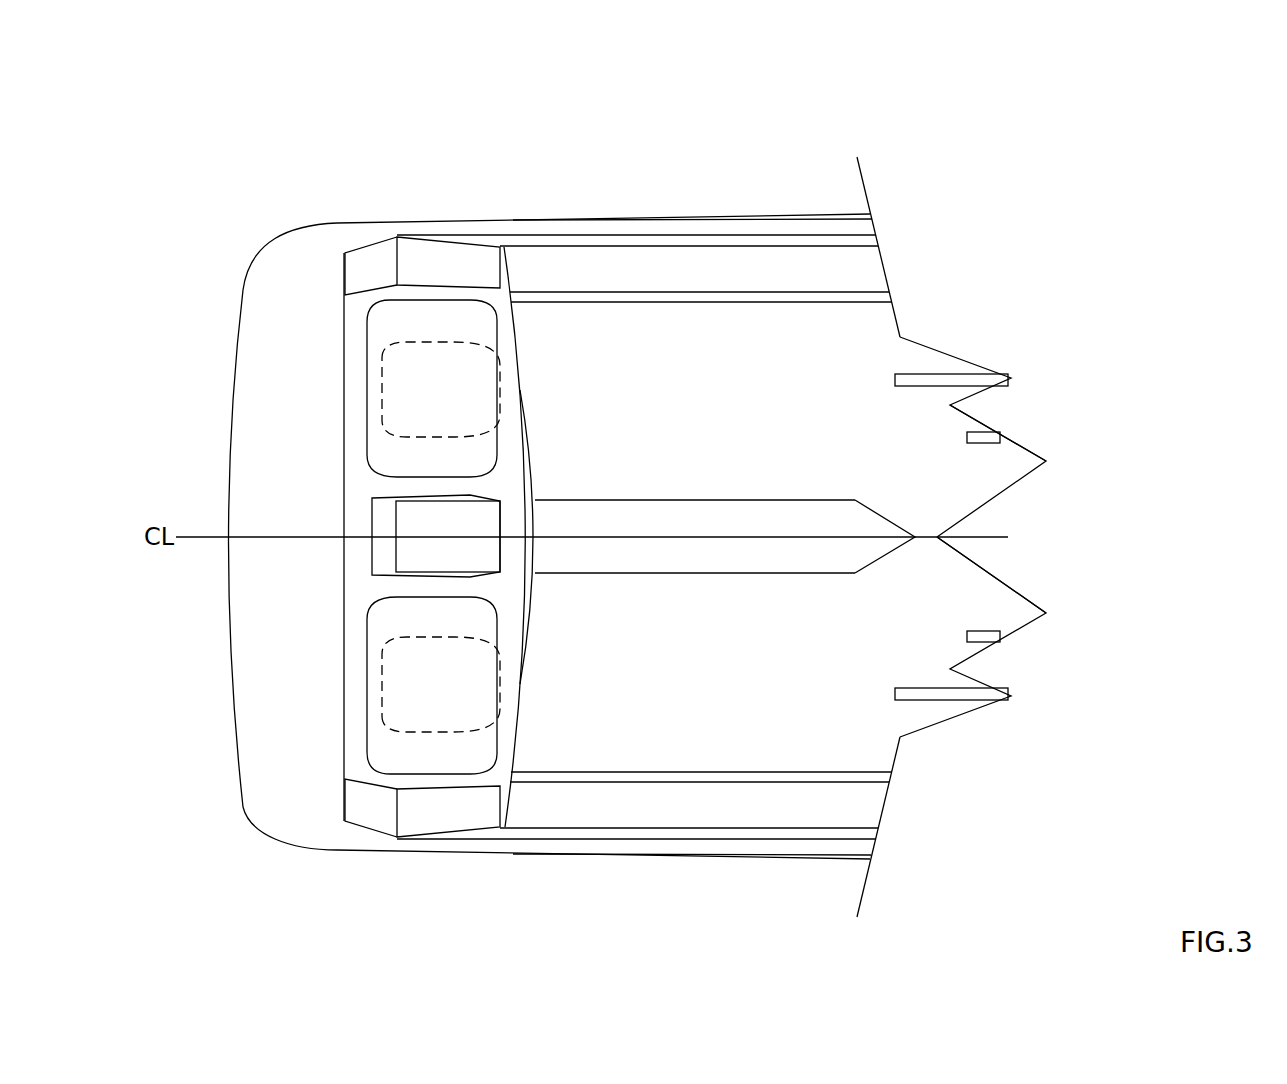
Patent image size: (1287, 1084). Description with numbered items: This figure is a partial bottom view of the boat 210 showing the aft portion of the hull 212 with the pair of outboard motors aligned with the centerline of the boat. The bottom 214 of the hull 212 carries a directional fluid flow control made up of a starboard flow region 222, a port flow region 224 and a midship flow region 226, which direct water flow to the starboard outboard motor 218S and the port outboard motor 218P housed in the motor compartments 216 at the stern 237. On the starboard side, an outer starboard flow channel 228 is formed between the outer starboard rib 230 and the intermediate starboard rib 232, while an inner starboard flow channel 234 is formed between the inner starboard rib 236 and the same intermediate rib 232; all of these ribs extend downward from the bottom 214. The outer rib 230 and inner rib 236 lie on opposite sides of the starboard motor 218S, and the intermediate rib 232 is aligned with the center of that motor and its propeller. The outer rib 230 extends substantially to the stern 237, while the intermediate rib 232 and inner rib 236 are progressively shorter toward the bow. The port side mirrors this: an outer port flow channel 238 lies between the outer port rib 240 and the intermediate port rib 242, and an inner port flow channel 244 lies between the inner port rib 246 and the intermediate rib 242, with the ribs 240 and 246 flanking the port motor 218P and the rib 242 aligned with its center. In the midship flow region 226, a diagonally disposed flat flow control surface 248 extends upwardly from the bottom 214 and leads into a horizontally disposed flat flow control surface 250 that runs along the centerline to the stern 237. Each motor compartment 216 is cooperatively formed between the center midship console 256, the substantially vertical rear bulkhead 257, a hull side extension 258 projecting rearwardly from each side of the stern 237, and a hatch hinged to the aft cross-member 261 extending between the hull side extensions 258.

The boat 210 is at (946, 170).
The hull 212 is at (648, 190).
The bottom of the hull 214 is at (983, 630).
The motor compartment 216 is at (515, 286).
The starboard outboard motor 218S is at (524, 391).
The port outboard motor 218P is at (523, 686).
The starboard flow region 222 is at (1023, 348).
The port flow region 224 is at (1024, 730).
The midship flow region 226 is at (648, 640).
The outer starboard flow channel 228 is at (817, 248).
The outer starboard directional control member or rib 230 is at (733, 300).
The intermediate starboard directional control member or rib 232 is at (908, 377).
The inner starboard flow channel 234 is at (935, 437).
The inner starboard directional control member or rib 236 is at (980, 443).
The stern 237 is at (526, 189).
The outer port flow channel 238 is at (722, 825).
The outer port directional control member or rib 240 is at (695, 778).
The intermediate port directional control member or rib 242 is at (908, 698).
The inner port flow channel 244 is at (935, 638).
The inner port directional control member or rib 246 is at (930, 595).
The diagonally disposed flat flow control surface 248 is at (880, 515).
The horizontally disposed flat flow control surface 250 is at (748, 551).
The center midship console 256 is at (508, 524).
The rear bulkhead 257 is at (532, 467).
The hull side extension 258 is at (418, 262).
The aft cross-member 261 is at (340, 762).